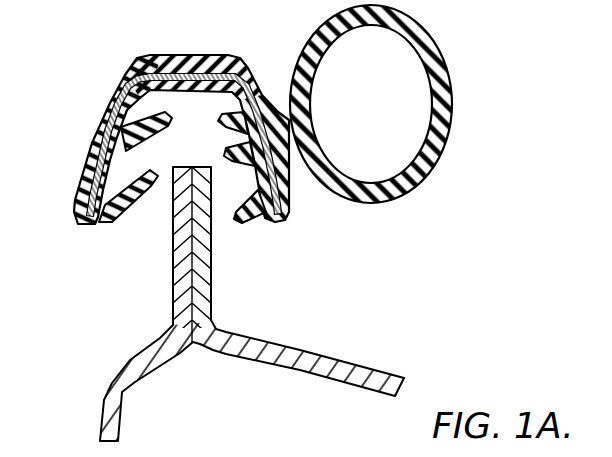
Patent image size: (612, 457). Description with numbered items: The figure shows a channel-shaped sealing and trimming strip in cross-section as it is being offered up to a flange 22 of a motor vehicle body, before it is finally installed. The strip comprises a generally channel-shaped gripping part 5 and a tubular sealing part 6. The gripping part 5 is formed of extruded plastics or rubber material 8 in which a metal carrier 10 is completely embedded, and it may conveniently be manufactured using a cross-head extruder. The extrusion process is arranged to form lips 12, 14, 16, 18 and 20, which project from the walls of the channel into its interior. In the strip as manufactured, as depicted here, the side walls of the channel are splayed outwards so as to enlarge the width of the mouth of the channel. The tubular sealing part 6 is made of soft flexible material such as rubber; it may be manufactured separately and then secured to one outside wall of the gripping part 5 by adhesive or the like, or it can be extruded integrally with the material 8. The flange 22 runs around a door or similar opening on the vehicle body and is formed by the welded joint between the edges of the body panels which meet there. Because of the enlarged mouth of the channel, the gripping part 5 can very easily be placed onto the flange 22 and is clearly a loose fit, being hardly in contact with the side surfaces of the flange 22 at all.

The gripping part 5 is at (198, 56).
The tubular sealing part 6 is at (453, 104).
The extruded plastics or rubber material 8 is at (224, 60).
The metal carrier 10 is at (153, 116).
The lip 12 is at (150, 121).
The lip 14 is at (130, 208).
The lip 16 is at (225, 118).
The lip 18 is at (227, 152).
The lip 20 is at (248, 214).
The flange 22 is at (206, 296).